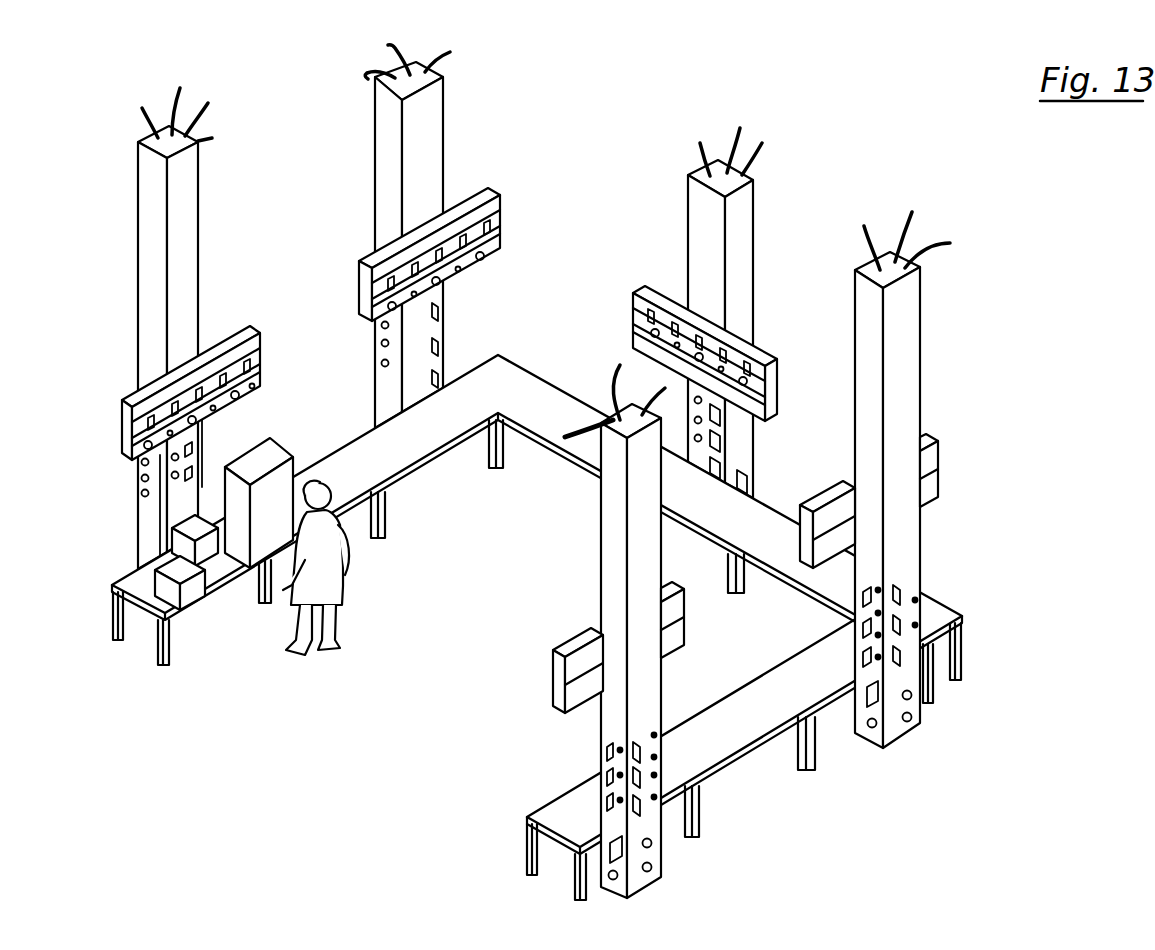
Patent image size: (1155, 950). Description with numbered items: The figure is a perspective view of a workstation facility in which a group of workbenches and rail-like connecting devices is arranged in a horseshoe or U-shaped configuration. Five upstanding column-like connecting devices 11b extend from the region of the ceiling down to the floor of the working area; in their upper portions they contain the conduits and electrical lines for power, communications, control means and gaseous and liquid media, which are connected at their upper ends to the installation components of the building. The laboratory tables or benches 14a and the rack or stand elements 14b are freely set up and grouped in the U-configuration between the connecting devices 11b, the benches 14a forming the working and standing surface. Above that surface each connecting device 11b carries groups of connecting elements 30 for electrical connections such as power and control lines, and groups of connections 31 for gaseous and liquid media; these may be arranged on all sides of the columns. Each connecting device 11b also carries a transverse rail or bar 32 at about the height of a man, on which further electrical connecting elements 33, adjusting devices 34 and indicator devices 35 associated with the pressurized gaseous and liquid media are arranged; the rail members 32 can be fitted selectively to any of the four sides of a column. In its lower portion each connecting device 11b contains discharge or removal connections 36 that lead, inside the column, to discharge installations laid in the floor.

The column-like connecting device 11b is at (148, 192).
The transverse rail or bar 32 is at (120, 385).
The electrical connecting elements 33 is at (400, 243).
The adjusting devices 34 is at (500, 233).
The indicator devices 35 is at (365, 305).
The connecting elements 30 is at (440, 367).
The connections 31 is at (415, 363).
The laboratory tables or benches 14a is at (393, 437).
The rack or stand elements 14b is at (505, 375).
The discharge or removal connections 36 is at (877, 725).